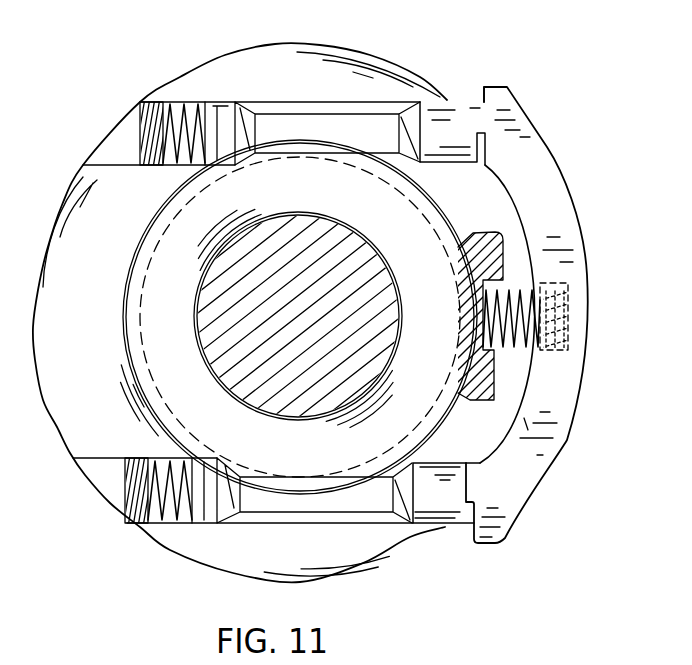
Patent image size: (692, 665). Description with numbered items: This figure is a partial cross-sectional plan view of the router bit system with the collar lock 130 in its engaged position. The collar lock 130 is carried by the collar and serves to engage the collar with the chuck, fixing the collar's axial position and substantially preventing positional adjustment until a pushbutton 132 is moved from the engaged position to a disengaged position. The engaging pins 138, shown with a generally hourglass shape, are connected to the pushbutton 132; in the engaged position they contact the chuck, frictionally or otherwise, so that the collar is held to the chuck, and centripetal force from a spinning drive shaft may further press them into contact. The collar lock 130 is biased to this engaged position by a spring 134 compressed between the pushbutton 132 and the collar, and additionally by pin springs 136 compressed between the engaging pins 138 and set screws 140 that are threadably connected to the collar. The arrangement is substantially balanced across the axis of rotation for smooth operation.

The collar lock 130 is at (546, 138).
The pushbutton 132 is at (576, 203).
The spring 134 is at (516, 292).
The pin springs 136 is at (185, 108).
The engaging pins 138 is at (465, 118).
The set screws 140 is at (138, 135).